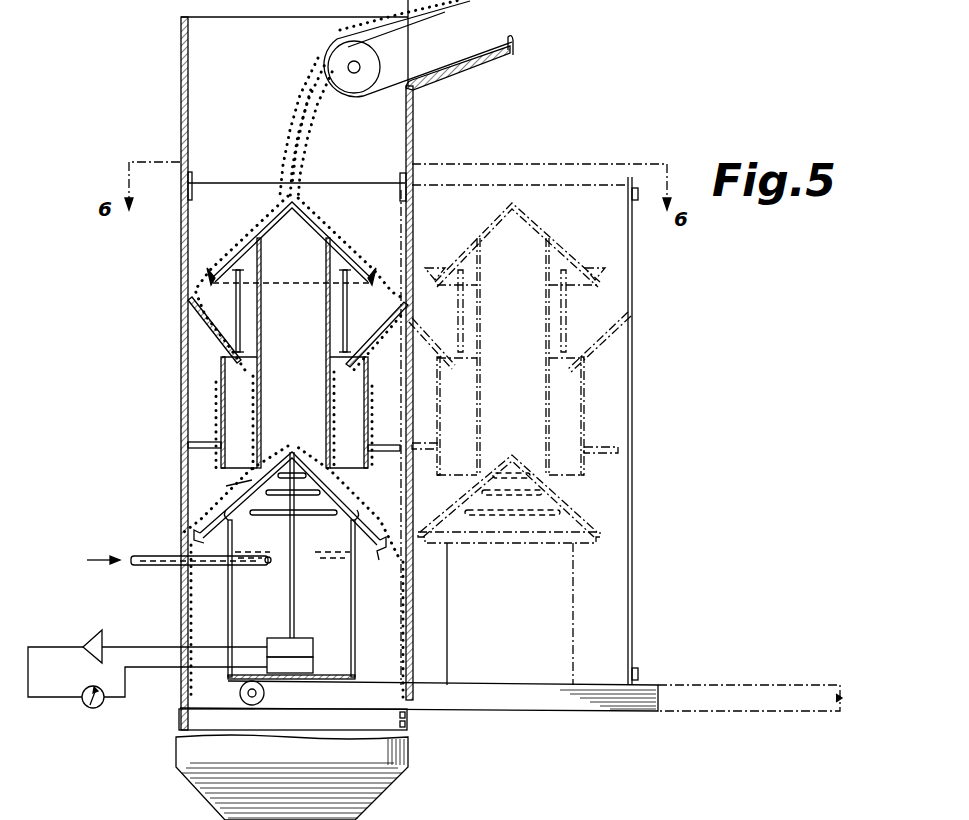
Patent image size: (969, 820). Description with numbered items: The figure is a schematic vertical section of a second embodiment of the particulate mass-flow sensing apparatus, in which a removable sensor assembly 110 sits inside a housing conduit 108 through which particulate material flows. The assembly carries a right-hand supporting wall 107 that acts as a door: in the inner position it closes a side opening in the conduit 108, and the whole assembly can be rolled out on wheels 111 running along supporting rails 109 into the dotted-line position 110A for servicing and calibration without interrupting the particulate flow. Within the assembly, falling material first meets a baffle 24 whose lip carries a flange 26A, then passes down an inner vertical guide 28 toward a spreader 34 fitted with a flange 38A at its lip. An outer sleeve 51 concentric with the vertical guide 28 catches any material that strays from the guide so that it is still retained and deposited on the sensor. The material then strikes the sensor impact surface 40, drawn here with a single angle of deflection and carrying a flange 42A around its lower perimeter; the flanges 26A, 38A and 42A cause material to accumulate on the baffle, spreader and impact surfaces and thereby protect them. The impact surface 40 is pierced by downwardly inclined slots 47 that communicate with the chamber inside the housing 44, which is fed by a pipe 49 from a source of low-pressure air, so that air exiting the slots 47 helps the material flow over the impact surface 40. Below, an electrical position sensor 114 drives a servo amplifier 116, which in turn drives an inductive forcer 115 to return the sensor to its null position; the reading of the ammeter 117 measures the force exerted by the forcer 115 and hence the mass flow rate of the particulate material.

The housing conduit 108 is at (183, 122).
The right-hand supporting wall 107 is at (413, 222).
The removable sensor assembly 110 is at (222, 231).
The removable sensor assembly (withdrawn position) 110A is at (640, 360).
The baffle 24 is at (343, 247).
The inner vertical guide 28 is at (263, 404).
The flange 26A is at (192, 283).
The spreader 34 is at (383, 342).
The outer sleeve 51 is at (221, 397).
The flange 38A is at (342, 368).
The sensor impact surface 40 is at (347, 495).
The downwardly inclined slots 47 is at (253, 480).
The flange 42A is at (378, 547).
The housing 44 is at (356, 635).
The pipe 49 is at (150, 554).
The electrical position sensor 114 is at (310, 636).
The inductive forcer 115 is at (313, 662).
The servo amplifier 116 is at (96, 642).
The ammeter 117 is at (95, 709).
The supporting rails 109 is at (525, 700).
The wheels 111 is at (264, 693).